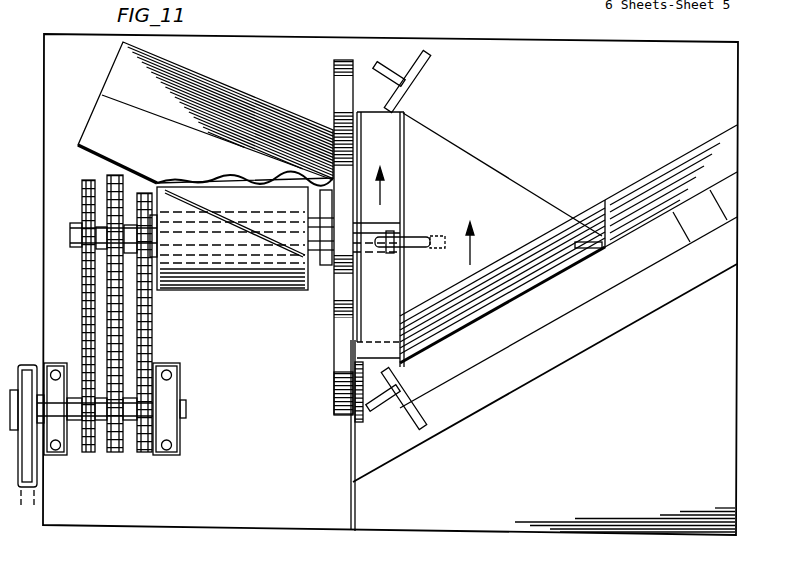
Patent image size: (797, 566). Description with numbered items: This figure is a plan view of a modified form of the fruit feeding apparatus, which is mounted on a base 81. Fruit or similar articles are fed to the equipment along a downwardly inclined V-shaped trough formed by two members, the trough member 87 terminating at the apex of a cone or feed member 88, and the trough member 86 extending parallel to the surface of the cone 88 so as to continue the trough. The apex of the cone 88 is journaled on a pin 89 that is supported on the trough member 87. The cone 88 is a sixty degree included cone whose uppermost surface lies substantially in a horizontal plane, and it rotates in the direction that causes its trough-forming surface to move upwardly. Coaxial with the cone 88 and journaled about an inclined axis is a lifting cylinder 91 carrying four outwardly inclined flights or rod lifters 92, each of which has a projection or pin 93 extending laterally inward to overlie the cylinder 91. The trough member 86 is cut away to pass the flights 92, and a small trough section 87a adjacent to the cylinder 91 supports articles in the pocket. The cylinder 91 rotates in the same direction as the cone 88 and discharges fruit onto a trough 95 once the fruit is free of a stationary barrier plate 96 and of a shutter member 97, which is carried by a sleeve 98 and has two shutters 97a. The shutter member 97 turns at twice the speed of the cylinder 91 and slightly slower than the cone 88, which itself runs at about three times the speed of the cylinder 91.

The base 81 is at (625, 494).
The trough member 86 is at (607, 330).
The trough member 87 is at (722, 141).
The small trough section 87a is at (353, 424).
The cone 88 is at (487, 191).
The pin 89 is at (598, 240).
The cylinder 91 is at (72, 225).
The flights 92 is at (428, 72).
The pin 93 is at (388, 66).
The trough 95 is at (107, 113).
The stationary barrier plate 96 is at (350, 500).
The shutter member 97 is at (340, 82).
The shutters 97a is at (336, 388).
The sleeve 98 is at (318, 290).